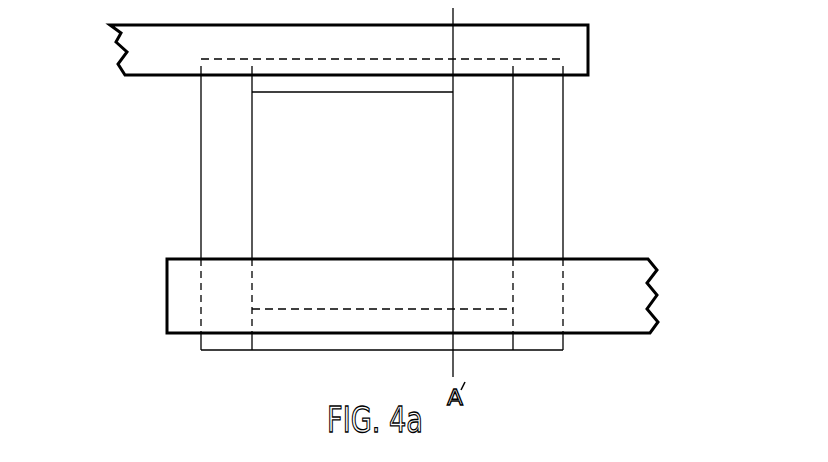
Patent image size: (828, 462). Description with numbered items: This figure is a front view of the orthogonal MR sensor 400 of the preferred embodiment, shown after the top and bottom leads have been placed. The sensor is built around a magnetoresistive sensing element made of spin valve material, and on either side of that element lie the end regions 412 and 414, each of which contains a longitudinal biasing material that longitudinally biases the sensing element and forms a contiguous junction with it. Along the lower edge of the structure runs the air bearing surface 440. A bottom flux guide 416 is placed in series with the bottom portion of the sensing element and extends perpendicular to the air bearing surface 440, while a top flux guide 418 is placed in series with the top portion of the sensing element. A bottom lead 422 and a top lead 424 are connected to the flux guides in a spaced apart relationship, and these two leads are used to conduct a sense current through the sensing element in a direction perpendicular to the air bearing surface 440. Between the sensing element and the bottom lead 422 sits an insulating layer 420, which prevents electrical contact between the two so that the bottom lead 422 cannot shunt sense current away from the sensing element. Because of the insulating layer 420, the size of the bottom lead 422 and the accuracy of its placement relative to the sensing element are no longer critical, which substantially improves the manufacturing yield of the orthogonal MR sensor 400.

The orthogonal MR sensor 400 is at (386, 221).
The end region 412 is at (540, 157).
The end region 414 is at (218, 210).
The bottom flux guide 416 is at (493, 343).
The top flux guide 418 is at (492, 85).
The insulating layer 420 is at (480, 206).
The bottom lead 422 is at (622, 303).
The top lead 424 is at (573, 42).
The air bearing surface 440 is at (315, 352).